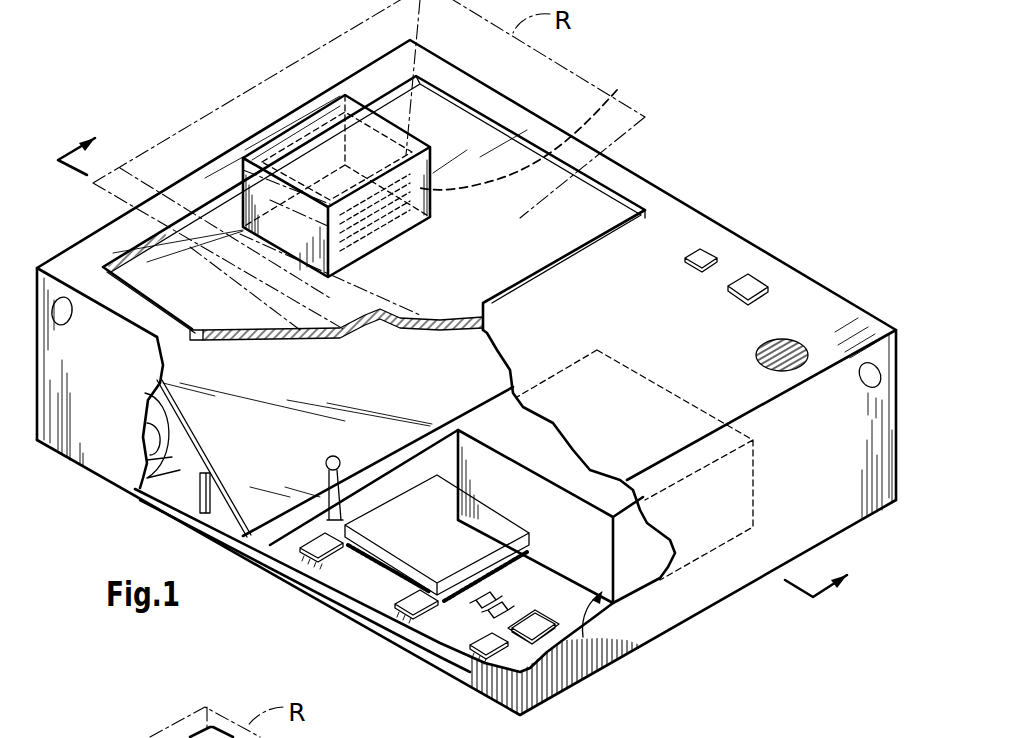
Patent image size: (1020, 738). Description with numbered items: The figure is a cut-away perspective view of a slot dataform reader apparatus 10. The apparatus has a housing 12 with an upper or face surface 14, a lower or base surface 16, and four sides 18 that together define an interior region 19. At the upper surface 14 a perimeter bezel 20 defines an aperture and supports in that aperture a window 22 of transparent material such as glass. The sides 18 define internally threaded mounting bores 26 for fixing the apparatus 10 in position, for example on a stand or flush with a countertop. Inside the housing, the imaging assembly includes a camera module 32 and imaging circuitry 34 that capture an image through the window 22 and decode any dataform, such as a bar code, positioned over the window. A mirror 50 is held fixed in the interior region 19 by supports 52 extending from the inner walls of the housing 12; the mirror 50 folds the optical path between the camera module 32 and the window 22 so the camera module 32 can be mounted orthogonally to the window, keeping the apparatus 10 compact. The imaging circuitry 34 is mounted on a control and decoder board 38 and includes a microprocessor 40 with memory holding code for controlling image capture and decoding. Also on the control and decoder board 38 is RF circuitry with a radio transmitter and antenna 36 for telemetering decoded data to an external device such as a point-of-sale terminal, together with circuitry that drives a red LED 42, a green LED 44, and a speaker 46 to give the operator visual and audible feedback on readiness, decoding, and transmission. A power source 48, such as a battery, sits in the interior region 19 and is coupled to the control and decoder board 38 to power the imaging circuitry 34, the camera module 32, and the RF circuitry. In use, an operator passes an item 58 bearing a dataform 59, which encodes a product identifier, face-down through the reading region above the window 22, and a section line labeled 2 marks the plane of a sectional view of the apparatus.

The slot dataform reader apparatus 10 is at (213, 88).
The housing 12 is at (740, 250).
The upper surface 14 is at (797, 300).
The lower surface 16 is at (724, 597).
The sides 18 is at (101, 402).
The interior region 19 is at (425, 400).
The perimeter bezel 20 is at (503, 130).
The window 22 is at (202, 296).
The mounting bores 26 is at (55, 298).
The camera module 32 is at (590, 643).
The imaging circuitry 34 is at (362, 592).
The antenna 36 is at (318, 505).
The control and decoder board 38 is at (450, 626).
The microprocessor 40 is at (372, 577).
The red LED 42 is at (703, 248).
The green LED 44 is at (762, 276).
The speaker 46 is at (790, 353).
The power source 48 is at (150, 488).
The mirror 50 is at (237, 445).
The supports 52 is at (196, 512).
The item 58 is at (290, 127).
The dataform 59 is at (617, 90).
The section line 2 is at (462, 357).